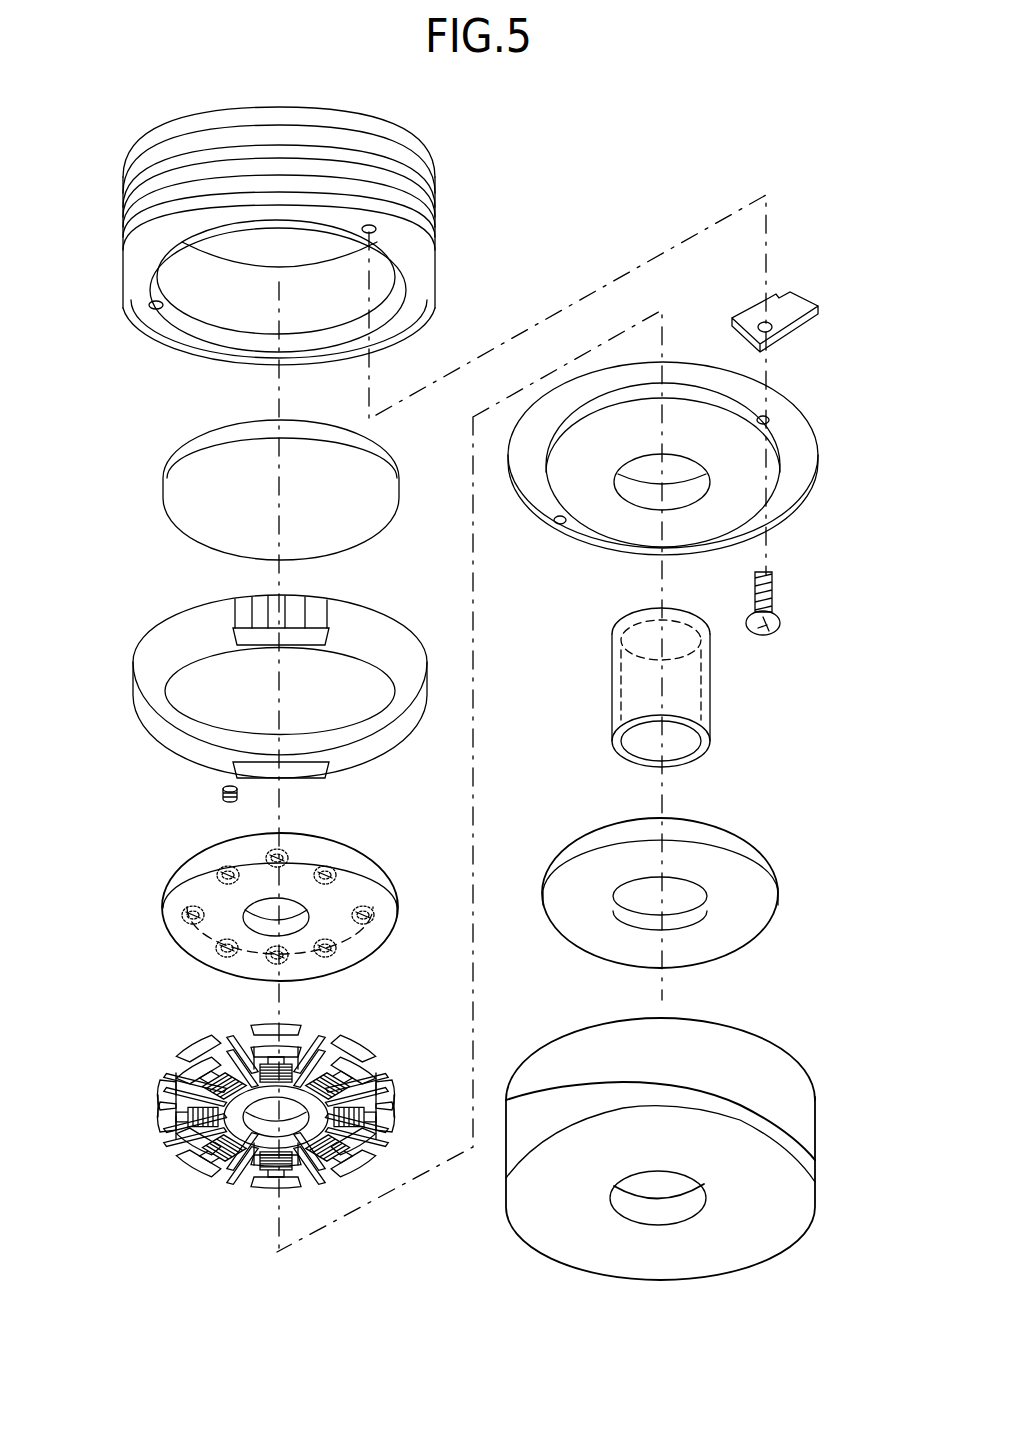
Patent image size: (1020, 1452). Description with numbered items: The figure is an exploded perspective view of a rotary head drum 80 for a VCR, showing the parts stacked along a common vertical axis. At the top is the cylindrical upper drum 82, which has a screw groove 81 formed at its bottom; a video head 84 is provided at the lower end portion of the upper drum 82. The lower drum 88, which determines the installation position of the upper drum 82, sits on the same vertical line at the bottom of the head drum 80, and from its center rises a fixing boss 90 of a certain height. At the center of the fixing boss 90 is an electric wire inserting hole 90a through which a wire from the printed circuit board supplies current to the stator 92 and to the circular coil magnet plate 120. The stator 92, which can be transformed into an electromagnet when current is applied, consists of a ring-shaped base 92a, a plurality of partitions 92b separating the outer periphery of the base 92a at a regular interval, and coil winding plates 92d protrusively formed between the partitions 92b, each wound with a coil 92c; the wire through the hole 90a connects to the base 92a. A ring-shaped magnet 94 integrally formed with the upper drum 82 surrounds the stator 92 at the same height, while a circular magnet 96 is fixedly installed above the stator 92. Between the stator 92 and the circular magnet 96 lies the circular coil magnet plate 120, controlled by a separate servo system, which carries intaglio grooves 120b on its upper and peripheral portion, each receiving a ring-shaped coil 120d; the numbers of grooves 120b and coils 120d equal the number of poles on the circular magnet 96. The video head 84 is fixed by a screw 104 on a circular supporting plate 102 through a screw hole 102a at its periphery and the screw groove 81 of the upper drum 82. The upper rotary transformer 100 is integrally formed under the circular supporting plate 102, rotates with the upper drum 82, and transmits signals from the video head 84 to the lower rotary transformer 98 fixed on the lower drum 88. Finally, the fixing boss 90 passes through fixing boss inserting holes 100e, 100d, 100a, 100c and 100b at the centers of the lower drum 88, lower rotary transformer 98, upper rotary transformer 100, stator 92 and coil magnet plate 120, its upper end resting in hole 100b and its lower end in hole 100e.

The head drum 80 is at (136, 82).
The screw groove 81 is at (376, 228).
The upper drum 82 is at (286, 236).
The video head 84 is at (800, 291).
The lower drum 88 is at (607, 1149).
The fixing boss 90 is at (747, 687).
The electric wire inserting hole 90a is at (673, 740).
The stator 92 is at (221, 1150).
The ring-shaped base 92a is at (268, 1140).
The partitions 92b is at (185, 1142).
The coil 92c is at (167, 1122).
The coil winding plate 92d is at (167, 1107).
The ring-shaped magnet 94 is at (133, 706).
The circular magnet 96 is at (193, 508).
The lower rotary transformer 98 is at (714, 893).
The upper rotary transformer 100 is at (699, 458).
The fixing boss inserting hole 100a is at (665, 466).
The fixing boss inserting hole 100b is at (268, 910).
The fixing boss inserting hole 100c is at (288, 1123).
The fixing boss inserting hole 100d is at (678, 895).
The fixing boss inserting hole 100e is at (648, 1187).
The circular supporting plate 102 is at (660, 385).
The screw hole 102a is at (770, 420).
The screw 104 is at (775, 600).
The circular coil magnet plate 120 is at (224, 919).
The intaglio grooves 120b is at (183, 912).
The ring-shaped coil 120d is at (221, 797).